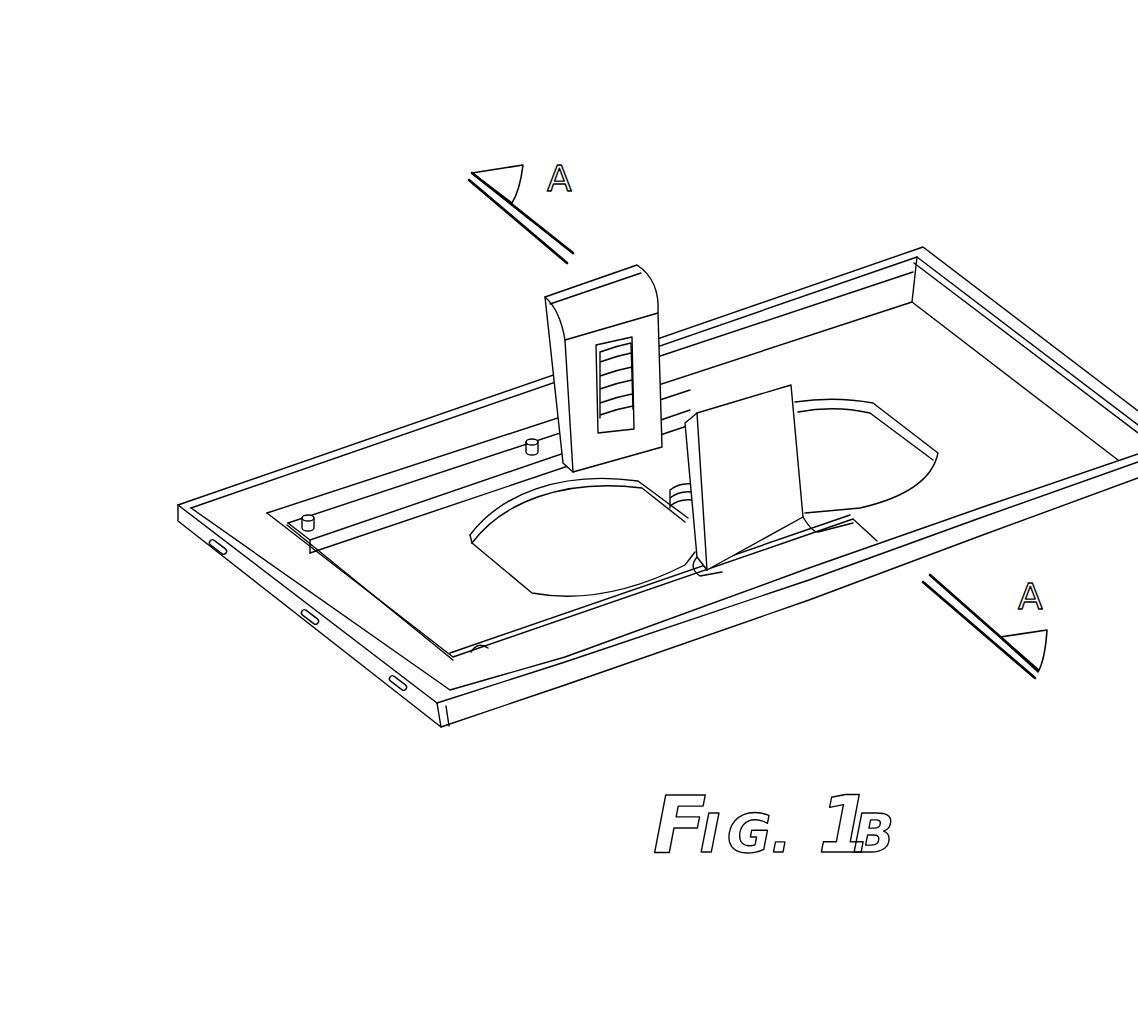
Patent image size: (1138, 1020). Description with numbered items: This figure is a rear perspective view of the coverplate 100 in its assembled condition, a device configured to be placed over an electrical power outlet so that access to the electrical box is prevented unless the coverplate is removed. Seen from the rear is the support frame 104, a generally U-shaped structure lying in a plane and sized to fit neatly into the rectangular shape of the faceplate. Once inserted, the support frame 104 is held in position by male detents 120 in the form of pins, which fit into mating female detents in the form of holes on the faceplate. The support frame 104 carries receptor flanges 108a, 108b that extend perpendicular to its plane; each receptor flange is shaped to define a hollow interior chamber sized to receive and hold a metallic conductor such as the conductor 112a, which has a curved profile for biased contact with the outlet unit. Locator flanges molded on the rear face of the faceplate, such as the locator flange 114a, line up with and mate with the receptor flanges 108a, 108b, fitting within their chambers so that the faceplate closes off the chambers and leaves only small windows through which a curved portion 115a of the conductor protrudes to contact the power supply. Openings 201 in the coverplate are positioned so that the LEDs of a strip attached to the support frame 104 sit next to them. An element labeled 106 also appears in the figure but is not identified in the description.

The coverplate 100 is at (929, 175).
The support frame 104 is at (427, 447).
The tray housing 106 is at (340, 596).
The receptor flange 108a is at (668, 326).
The receptor flange 108b is at (768, 413).
The metallic conductor 112a is at (615, 373).
The locator flange 114a is at (608, 438).
The curved portion 115a is at (625, 388).
The male detents 120 is at (530, 443).
The openings 201 is at (220, 555).